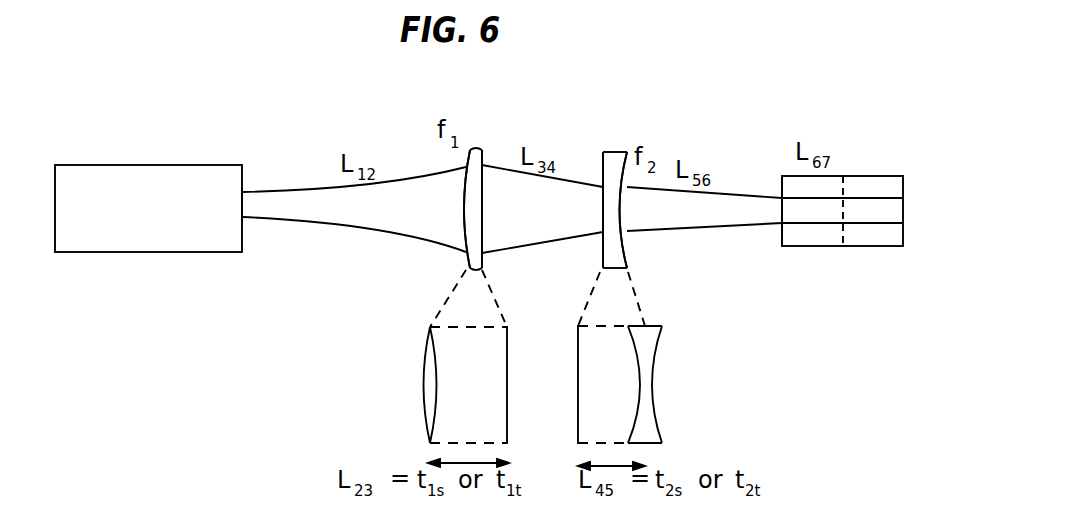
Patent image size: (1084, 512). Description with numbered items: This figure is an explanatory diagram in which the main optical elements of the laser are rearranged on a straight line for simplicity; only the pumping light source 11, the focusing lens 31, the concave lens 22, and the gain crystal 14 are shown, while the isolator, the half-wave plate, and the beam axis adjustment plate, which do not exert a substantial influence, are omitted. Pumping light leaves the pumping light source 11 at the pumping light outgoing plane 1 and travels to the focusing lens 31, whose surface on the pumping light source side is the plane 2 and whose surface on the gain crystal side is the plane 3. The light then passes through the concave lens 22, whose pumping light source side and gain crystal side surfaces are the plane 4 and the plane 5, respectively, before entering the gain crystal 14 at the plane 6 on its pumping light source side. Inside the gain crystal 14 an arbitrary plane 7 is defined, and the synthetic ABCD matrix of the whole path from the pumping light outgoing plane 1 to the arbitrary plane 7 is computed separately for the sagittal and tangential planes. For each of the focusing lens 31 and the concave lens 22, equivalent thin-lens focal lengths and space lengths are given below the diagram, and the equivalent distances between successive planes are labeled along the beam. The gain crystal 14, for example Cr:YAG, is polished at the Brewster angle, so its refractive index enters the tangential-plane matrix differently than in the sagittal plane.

The pumping light outgoing plane 1 is at (243, 232).
The plane of the pumping light source side of the focusing lens 2 is at (462, 205).
The plane of the gain crystal side of the focusing lens 3 is at (482, 197).
The plane of the pumping light source side of the concave lens 4 is at (601, 199).
The plane of the gain crystal side of the concave lens 5 is at (617, 213).
The plane of the pumping light source side of the gain crystal 6 is at (782, 213).
The arbitrary plane in the gain crystal 7 is at (843, 211).
The pumping light source 11 is at (212, 166).
The gain crystal 14 is at (868, 183).
The concave lens 22 is at (610, 158).
The focusing lens 31 is at (482, 150).